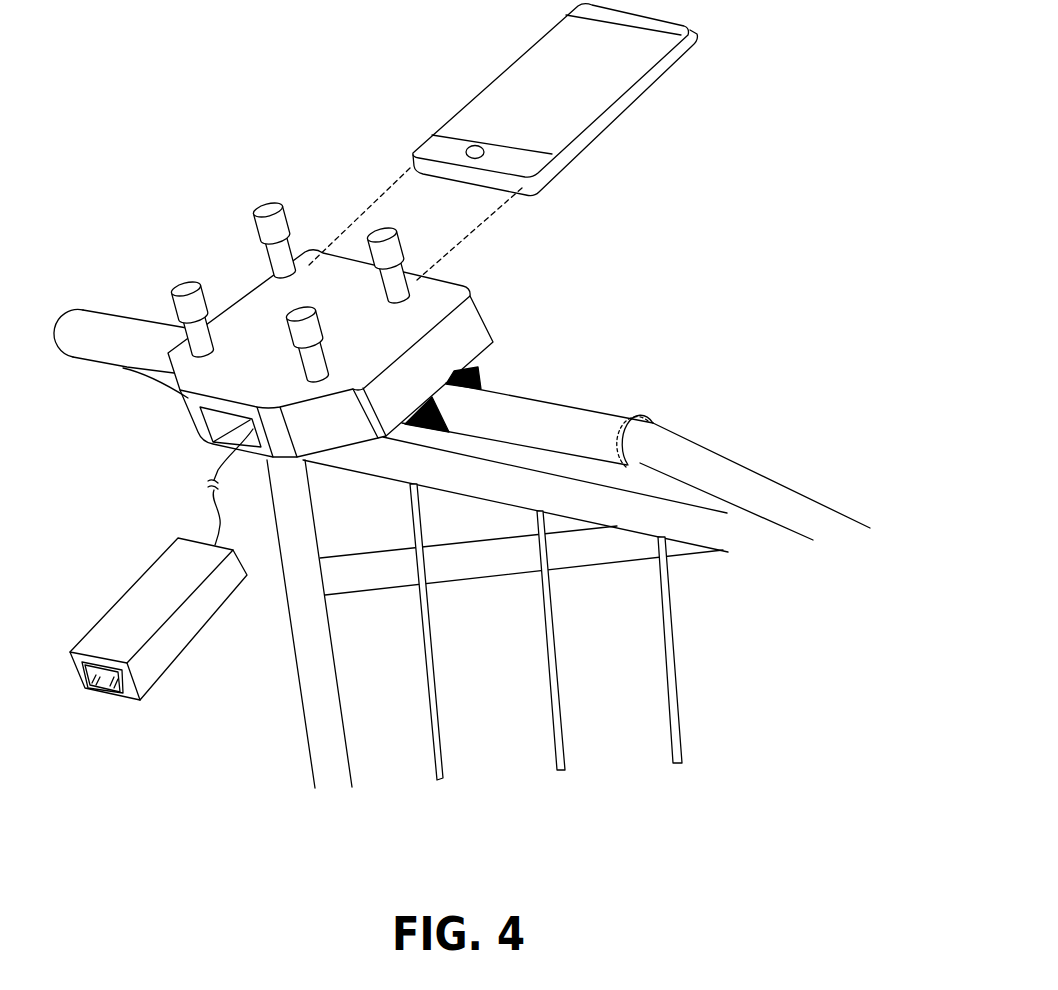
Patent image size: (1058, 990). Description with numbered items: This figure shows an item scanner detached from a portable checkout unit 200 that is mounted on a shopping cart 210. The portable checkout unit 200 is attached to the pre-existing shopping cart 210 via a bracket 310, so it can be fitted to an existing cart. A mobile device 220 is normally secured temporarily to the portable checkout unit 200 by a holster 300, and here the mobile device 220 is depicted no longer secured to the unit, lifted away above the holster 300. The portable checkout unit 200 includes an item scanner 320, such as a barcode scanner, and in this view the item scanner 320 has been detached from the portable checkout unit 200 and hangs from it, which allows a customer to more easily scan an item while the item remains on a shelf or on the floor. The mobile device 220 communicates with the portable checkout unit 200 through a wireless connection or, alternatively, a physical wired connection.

The portable checkout unit 200 is at (481, 305).
The shopping cart 210 is at (667, 447).
The mobile device 220 is at (466, 91).
The holster 300 is at (479, 370).
The bracket 310 is at (159, 687).
The item scanner 320 is at (405, 265).